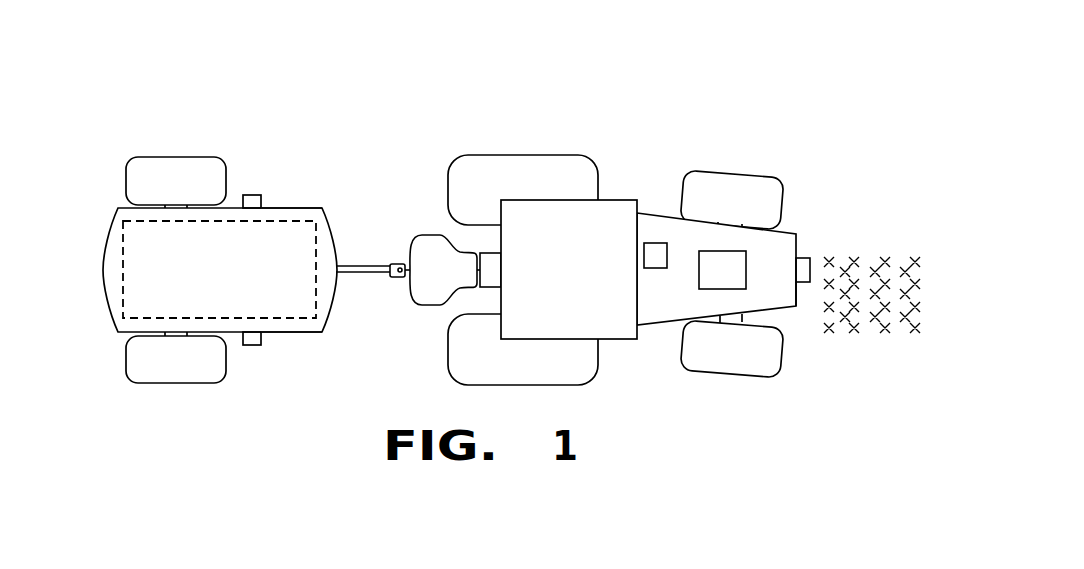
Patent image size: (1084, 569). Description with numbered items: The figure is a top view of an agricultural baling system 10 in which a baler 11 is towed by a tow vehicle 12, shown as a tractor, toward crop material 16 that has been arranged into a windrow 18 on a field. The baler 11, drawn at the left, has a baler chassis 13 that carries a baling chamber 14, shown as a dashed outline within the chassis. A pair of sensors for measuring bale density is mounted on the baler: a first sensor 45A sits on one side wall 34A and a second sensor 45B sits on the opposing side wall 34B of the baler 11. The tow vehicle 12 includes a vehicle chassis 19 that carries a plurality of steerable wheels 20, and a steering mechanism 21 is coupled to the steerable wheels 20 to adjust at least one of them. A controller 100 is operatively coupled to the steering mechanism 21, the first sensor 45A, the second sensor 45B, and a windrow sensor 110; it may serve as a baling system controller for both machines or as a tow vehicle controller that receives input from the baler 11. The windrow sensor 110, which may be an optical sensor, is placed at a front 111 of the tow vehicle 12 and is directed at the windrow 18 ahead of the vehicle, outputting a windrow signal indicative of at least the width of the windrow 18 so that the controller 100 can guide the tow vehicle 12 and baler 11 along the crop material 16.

The agricultural baling system 10 is at (497, 100).
The baler 11 is at (265, 170).
The tow vehicle 12 is at (568, 147).
The baler chassis 13 is at (336, 224).
The baling chamber 14 is at (122, 247).
The crop material 16 is at (915, 257).
The windrow 18 is at (887, 350).
The vehicle chassis 19 is at (658, 324).
The steerable wheels 20 is at (747, 175).
The steering mechanism 21 is at (747, 262).
The side wall 34A is at (280, 208).
The side wall 34B is at (270, 334).
The first sensor 45A is at (249, 195).
The second sensor 45B is at (251, 345).
The controller 100 is at (655, 243).
The windrow sensor 110 is at (812, 258).
The front 111 is at (798, 300).